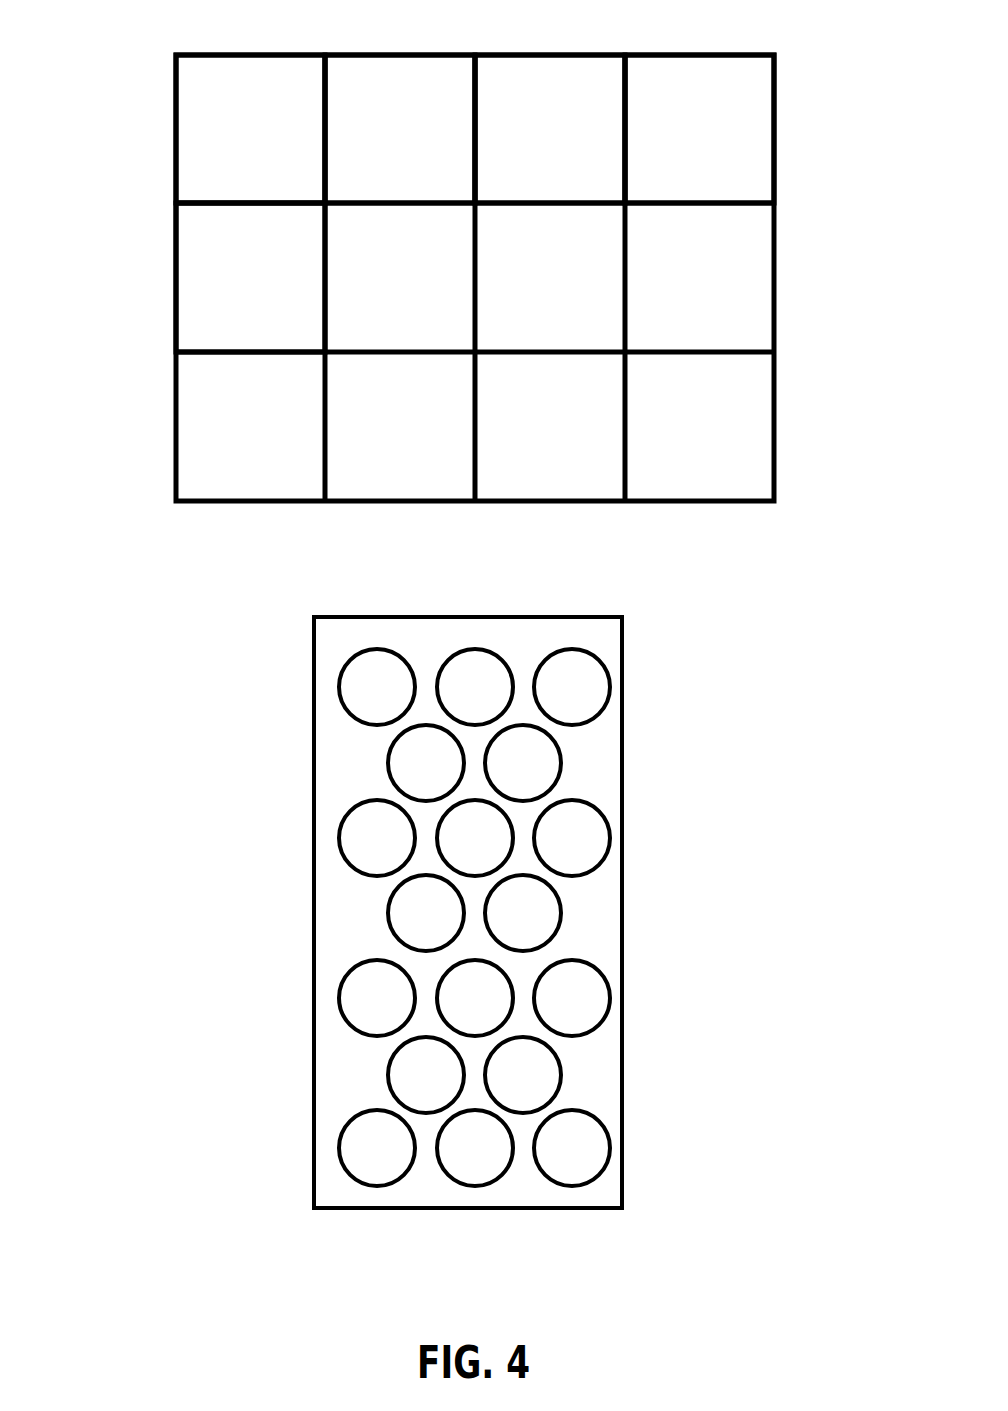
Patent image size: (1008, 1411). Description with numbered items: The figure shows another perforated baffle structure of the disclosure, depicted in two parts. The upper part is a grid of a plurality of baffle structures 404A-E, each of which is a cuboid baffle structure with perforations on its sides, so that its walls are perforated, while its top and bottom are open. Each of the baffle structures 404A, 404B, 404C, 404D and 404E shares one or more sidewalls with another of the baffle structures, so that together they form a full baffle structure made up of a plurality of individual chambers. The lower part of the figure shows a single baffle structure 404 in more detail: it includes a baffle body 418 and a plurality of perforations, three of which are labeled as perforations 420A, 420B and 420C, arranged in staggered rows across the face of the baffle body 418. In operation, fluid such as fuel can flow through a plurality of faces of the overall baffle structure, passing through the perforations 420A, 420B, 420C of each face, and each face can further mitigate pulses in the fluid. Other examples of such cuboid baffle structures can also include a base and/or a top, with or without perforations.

The baffle structure 404 is at (347, 907).
The baffle structure 404A is at (212, 131).
The baffle structure 404B is at (398, 75).
The baffle structure 404C is at (565, 93).
The baffle structure 404D is at (733, 130).
The baffle structure 404E is at (212, 279).
The baffle body 418 is at (313, 652).
The perforation 420A is at (372, 1157).
The perforation 420B is at (408, 1075).
The perforation 420C is at (360, 998).